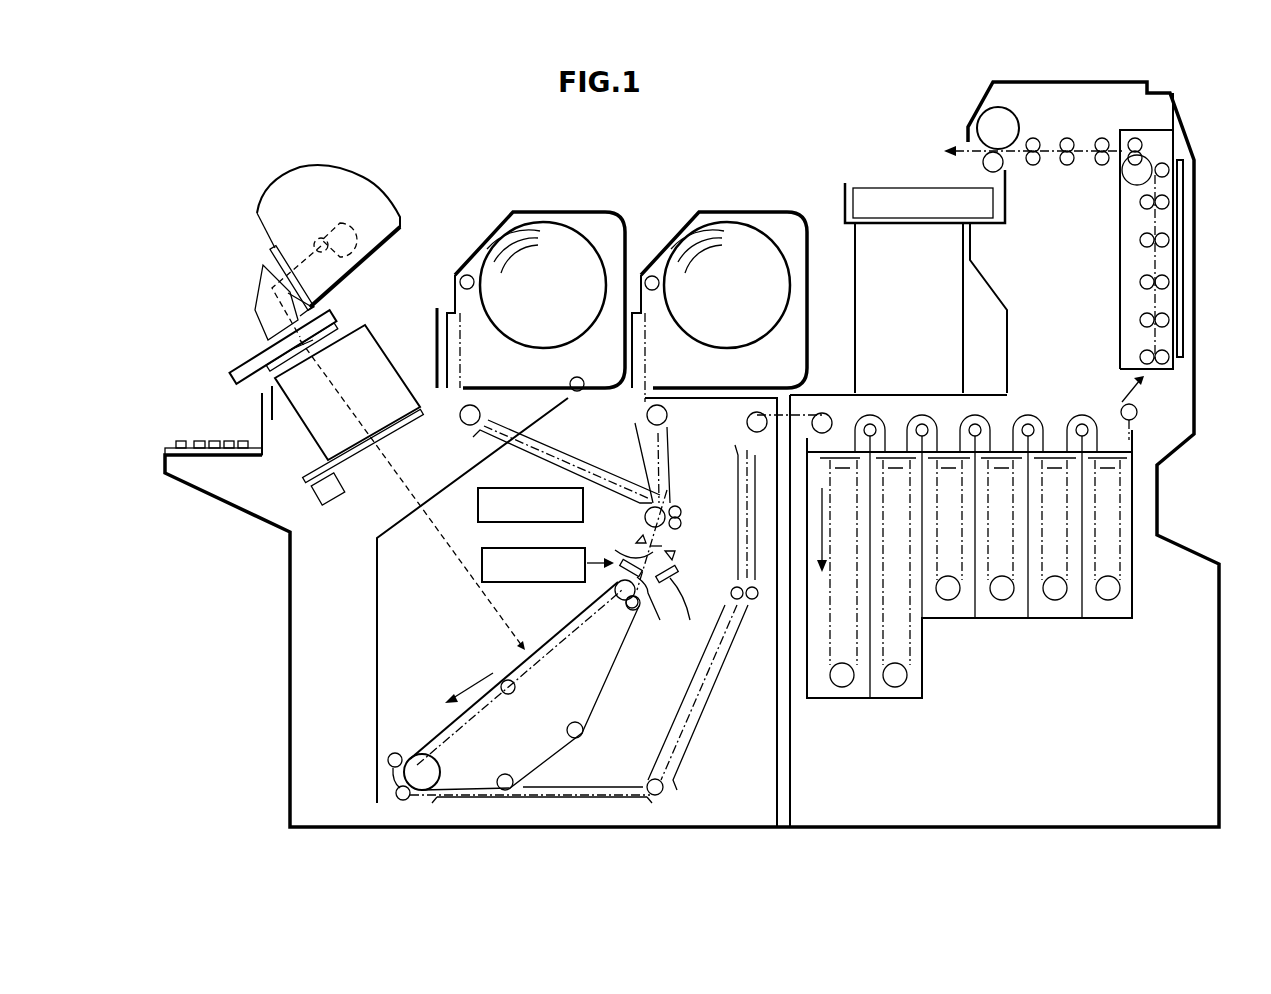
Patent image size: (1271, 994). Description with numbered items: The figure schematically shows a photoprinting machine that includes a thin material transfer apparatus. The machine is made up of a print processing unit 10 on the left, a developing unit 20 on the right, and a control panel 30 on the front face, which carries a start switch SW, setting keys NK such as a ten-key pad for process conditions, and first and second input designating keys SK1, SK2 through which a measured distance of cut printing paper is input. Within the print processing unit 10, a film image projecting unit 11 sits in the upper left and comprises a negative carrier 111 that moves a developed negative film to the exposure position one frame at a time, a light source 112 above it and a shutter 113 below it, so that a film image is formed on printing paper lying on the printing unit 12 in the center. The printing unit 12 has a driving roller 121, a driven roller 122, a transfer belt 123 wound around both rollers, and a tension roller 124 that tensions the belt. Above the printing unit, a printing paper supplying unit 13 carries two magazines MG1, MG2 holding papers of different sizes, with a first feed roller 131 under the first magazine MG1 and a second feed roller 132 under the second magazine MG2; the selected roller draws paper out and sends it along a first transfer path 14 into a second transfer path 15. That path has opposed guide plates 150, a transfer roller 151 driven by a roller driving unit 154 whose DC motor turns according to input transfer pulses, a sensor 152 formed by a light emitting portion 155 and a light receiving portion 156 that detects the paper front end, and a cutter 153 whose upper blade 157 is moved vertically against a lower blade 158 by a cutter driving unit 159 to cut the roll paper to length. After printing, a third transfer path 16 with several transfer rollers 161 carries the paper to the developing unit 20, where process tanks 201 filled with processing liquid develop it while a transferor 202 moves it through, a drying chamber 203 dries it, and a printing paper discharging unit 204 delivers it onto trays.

The print processing unit 10 is at (415, 640).
The film image projecting unit 11 is at (247, 328).
The negative carrier 111 is at (238, 380).
The light source 112 is at (341, 225).
The shutter 113 is at (312, 332).
The printing unit 12 is at (514, 691).
The driving roller 121 is at (433, 760).
The driven roller 122 is at (628, 612).
The transfer belt 123 is at (494, 680).
The tension roller 124 is at (505, 773).
The printing paper supplying unit 13 is at (579, 392).
The first feed roller 131 is at (474, 405).
The second feed roller 132 is at (668, 414).
The first transfer path 14 is at (400, 385).
The second transfer path 15 is at (672, 561).
The guide plates 150 is at (637, 541).
The transfer roller 151 is at (665, 508).
The sensor 152 is at (731, 598).
The cutter 153 is at (700, 648).
The roller driving unit 154 is at (533, 486).
The light emitting portion 155 is at (665, 546).
The light receiving portion 156 is at (673, 562).
The upper blade 157 is at (640, 580).
The lower blade 158 is at (678, 585).
The cutter driving unit 159 is at (537, 547).
The third transfer path 16 is at (616, 607).
The transfer rollers 161 is at (651, 779).
The developing unit 20 is at (969, 596).
The process tanks 201 is at (1013, 606).
The transferor 202 is at (843, 690).
The drying chamber 203 is at (1165, 330).
The printing paper discharging unit 204 is at (907, 183).
The control panel 30 is at (197, 465).
The first input designating key SK1 is at (183, 440).
The second input designating key SK2 is at (195, 455).
The start switch SW is at (220, 440).
The setting keys NK is at (247, 440).
The first magazine MG1 is at (550, 233).
The second magazine MG2 is at (735, 233).